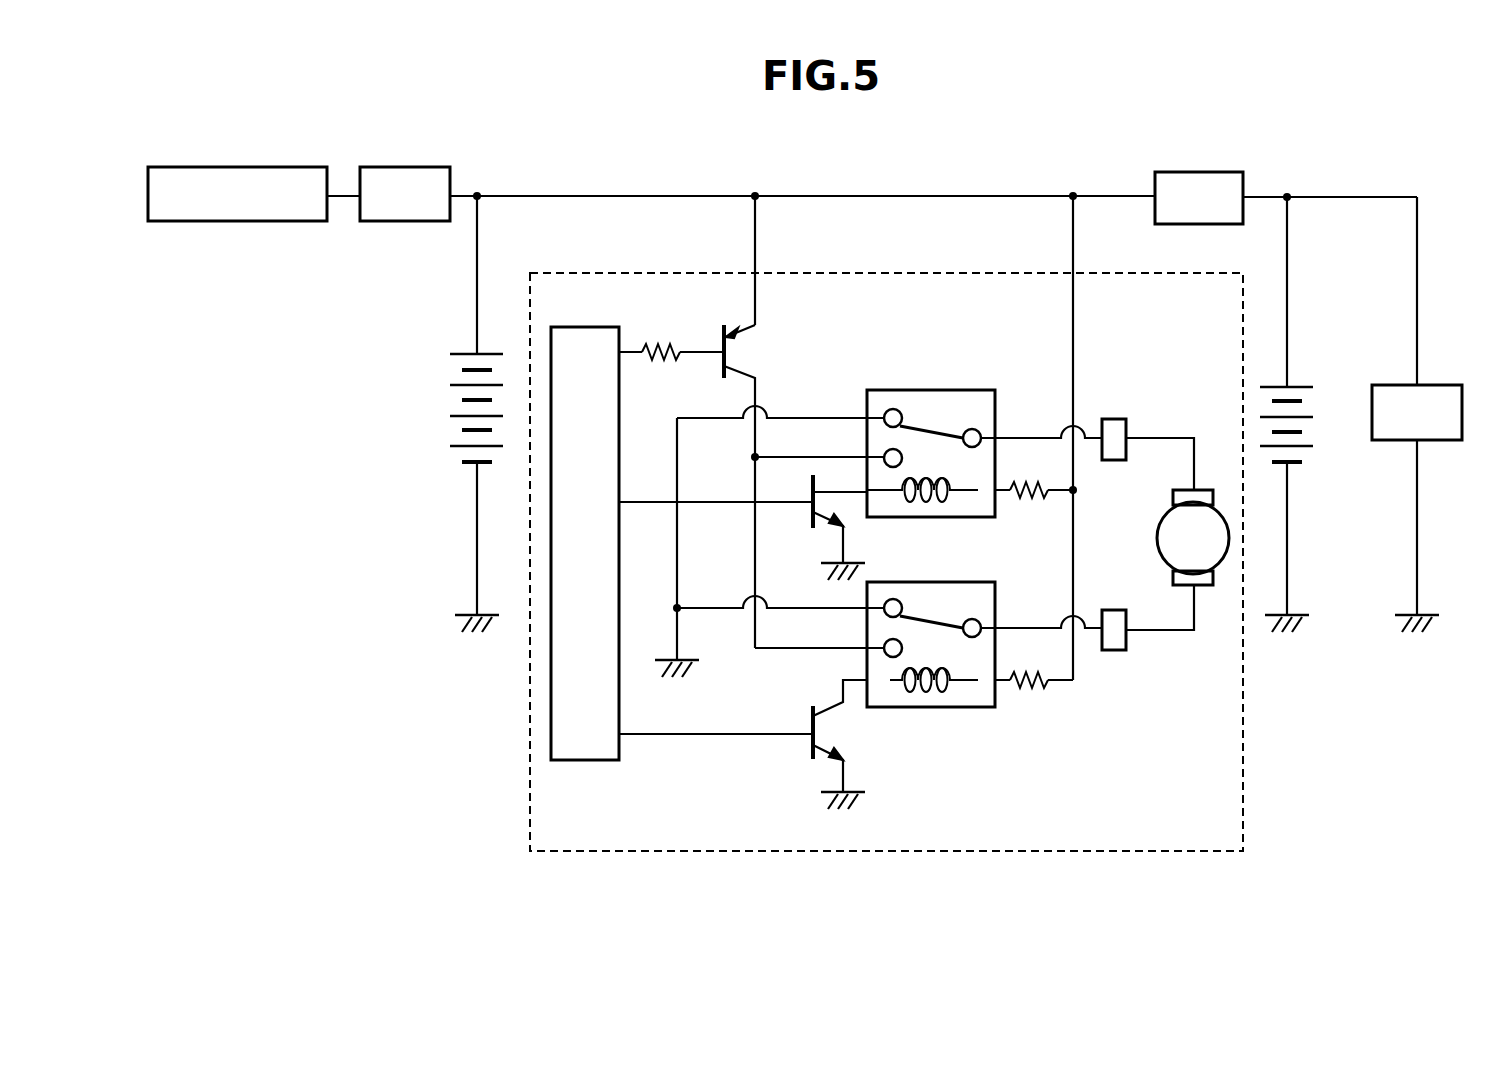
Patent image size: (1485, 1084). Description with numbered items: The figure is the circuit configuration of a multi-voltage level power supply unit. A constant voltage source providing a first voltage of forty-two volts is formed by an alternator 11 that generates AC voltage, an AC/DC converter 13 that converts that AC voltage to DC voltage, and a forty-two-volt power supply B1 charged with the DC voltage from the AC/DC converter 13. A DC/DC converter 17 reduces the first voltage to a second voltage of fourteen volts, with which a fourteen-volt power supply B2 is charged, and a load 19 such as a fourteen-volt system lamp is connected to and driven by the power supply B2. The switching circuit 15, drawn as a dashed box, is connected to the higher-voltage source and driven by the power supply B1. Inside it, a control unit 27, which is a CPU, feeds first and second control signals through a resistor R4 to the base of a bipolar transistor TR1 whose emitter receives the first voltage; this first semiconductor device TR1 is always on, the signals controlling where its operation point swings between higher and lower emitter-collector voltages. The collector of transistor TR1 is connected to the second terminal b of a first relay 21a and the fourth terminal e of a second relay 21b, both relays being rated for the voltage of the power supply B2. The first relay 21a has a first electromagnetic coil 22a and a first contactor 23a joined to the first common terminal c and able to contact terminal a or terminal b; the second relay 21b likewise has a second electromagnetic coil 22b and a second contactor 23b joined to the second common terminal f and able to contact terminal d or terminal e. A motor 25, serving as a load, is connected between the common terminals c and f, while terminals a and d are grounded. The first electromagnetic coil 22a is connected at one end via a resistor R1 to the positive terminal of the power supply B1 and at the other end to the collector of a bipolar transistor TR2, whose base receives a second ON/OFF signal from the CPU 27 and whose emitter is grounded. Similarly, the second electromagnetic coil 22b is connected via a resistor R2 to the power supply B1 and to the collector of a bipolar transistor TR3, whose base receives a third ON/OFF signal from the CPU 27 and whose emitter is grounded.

The alternator 11 is at (187, 167).
The AC/DC converter 13 is at (377, 167).
The switching circuit 15 is at (1243, 773).
The DC/DC converter 17 is at (1216, 172).
The load 19 is at (1448, 385).
The first relay 21a is at (915, 439).
The second relay 21b is at (999, 660).
The first electromagnetic coil 22a is at (935, 495).
The second electromagnetic coil 22b is at (890, 709).
The first contactor 23a is at (935, 435).
The second contactor 23b is at (938, 625).
The motor 25 is at (1157, 538).
The control unit 27 is at (580, 762).
The 42-volt power supply B1 is at (454, 406).
The 14-volt power supply B2 is at (1321, 456).
The first semiconductor device TR1 is at (718, 475).
The second semiconductor device TR2 is at (743, 527).
The third semiconductor device TR3 is at (743, 744).
The resistor R1 is at (1034, 475).
The resistor R2 is at (1034, 665).
The resistor R4 is at (671, 369).